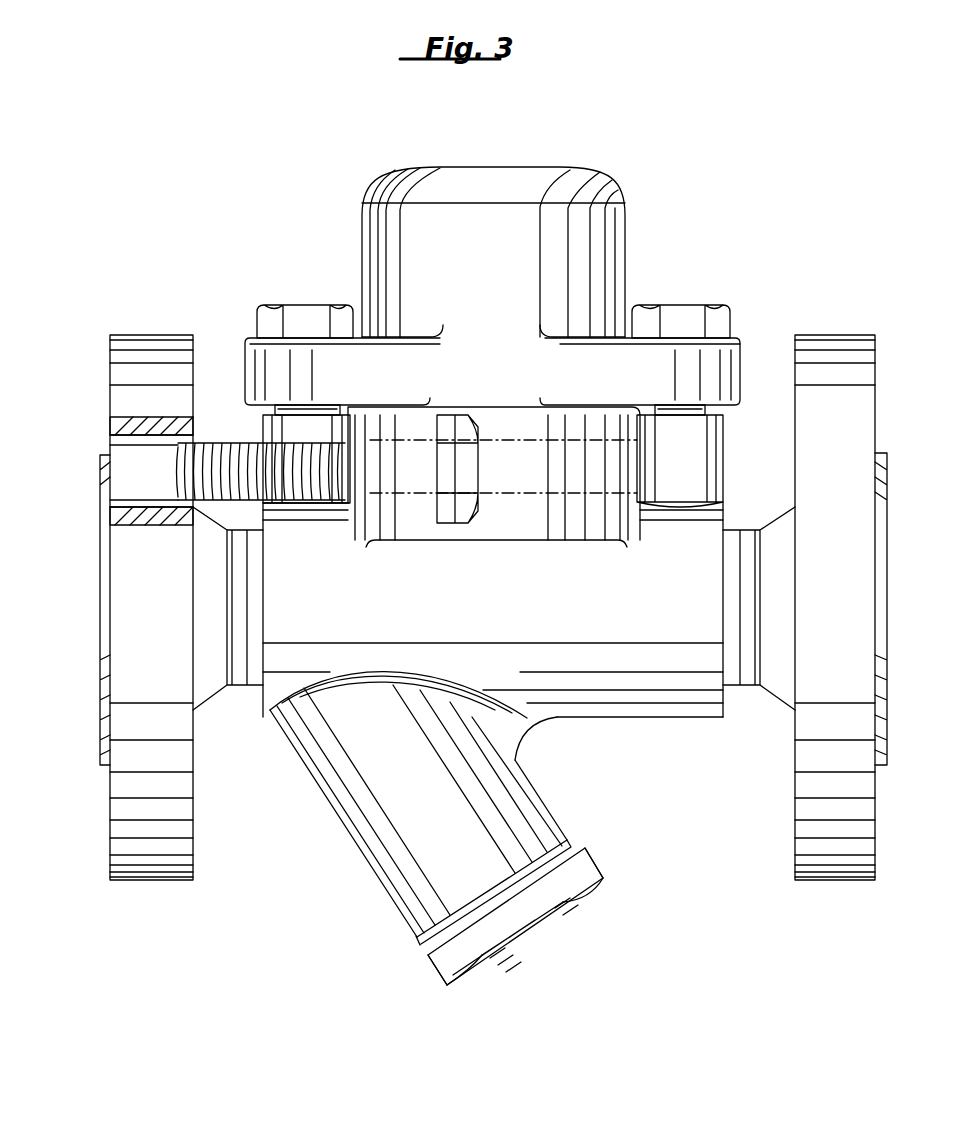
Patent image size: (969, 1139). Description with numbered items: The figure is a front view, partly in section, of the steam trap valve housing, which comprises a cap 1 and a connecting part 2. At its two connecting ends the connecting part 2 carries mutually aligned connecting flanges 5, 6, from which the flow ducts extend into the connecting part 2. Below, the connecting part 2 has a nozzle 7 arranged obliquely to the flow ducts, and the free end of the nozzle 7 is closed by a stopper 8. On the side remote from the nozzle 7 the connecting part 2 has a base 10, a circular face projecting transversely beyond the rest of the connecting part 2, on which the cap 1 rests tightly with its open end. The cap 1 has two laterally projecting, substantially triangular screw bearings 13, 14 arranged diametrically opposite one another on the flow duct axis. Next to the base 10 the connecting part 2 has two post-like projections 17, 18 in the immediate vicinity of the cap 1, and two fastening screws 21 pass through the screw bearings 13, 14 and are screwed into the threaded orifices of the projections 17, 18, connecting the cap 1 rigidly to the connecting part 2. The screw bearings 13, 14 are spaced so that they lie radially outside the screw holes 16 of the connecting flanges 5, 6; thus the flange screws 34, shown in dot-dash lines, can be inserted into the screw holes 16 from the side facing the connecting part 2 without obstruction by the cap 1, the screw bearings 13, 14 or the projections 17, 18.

The cap 1 is at (629, 200).
The connecting part 2 is at (627, 728).
The connecting flange 5 is at (145, 850).
The connecting flange 6 is at (828, 850).
The nozzle 7 is at (383, 848).
The stopper 8 is at (533, 905).
The base 10 is at (513, 510).
The screw bearing 13 is at (255, 362).
The screw bearing 14 is at (735, 360).
The screw holes 16 is at (118, 442).
The projection 17 is at (250, 418).
The projection 18 is at (705, 452).
The fastening screws 21 is at (300, 318).
The flange screws 34 is at (250, 483).